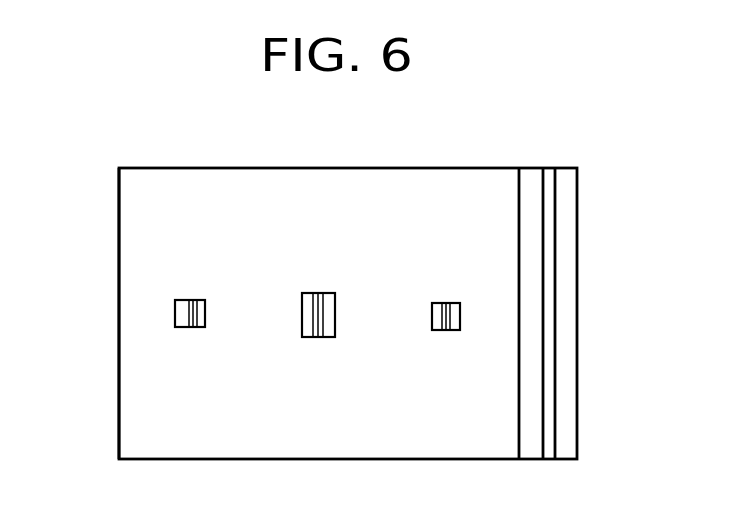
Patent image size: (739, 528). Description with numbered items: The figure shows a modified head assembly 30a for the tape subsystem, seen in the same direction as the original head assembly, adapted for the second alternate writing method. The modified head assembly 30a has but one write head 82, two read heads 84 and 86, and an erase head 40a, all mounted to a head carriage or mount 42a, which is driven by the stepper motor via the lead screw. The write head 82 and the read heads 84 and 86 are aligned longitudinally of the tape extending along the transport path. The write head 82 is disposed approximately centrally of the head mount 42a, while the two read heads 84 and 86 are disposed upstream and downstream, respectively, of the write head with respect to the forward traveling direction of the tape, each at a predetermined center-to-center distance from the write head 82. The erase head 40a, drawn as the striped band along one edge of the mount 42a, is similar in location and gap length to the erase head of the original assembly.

The modified head assembly 30a is at (92, 160).
The head carriage or mount 42a is at (119, 226).
The erase head 40a is at (572, 180).
The write head 82 is at (324, 339).
The read head 84 is at (453, 332).
The read head 86 is at (195, 329).